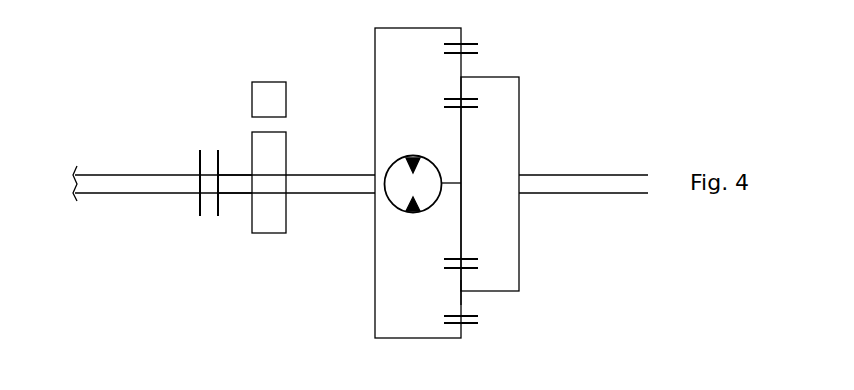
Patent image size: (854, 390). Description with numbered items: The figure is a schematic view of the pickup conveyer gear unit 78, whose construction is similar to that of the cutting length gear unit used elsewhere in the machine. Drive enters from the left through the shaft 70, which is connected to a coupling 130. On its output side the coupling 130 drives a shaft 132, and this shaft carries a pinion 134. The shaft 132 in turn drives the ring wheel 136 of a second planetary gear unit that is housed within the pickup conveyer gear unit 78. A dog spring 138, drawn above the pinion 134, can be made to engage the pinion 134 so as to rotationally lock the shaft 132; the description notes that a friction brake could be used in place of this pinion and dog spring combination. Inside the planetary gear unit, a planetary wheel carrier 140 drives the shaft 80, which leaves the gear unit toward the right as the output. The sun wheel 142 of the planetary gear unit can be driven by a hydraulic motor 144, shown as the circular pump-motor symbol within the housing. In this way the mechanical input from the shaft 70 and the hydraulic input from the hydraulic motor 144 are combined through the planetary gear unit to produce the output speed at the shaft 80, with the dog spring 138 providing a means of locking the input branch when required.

The shaft 70 is at (133, 185).
The pickup conveyer gear unit 78 is at (468, 72).
The shaft 80 is at (608, 180).
The coupling 130 is at (208, 148).
The shaft 132 is at (235, 183).
The pinion 134 is at (270, 223).
The ring wheel 136 is at (460, 328).
The dog spring 138 is at (268, 93).
The planetary wheel carrier 140 is at (456, 293).
The sun wheel 142 is at (460, 148).
The hydraulic motor 144 is at (430, 209).